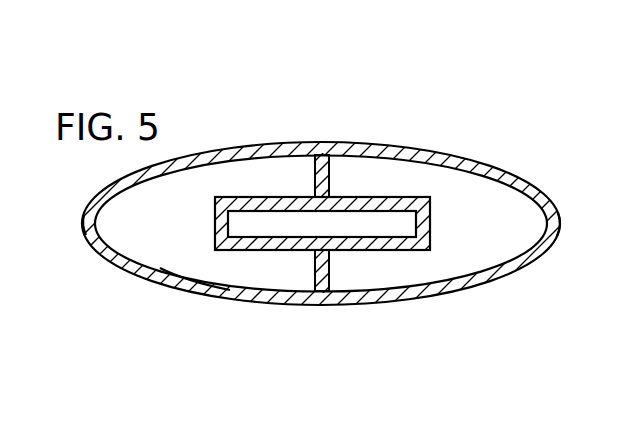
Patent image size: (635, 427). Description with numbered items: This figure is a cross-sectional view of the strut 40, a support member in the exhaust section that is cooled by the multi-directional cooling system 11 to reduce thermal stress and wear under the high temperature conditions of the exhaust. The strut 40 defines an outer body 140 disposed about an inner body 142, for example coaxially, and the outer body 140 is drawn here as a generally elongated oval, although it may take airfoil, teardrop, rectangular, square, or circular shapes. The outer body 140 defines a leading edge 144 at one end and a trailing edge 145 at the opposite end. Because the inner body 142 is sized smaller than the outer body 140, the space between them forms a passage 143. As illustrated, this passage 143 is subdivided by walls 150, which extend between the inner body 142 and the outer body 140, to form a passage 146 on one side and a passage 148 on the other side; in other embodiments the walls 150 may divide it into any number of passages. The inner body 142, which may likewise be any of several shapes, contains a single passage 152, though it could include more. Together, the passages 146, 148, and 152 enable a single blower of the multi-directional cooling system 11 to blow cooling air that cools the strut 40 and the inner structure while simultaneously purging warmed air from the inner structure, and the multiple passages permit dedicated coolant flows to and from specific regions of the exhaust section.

The multi-directional cooling system 11 is at (509, 148).
The strut 40 is at (446, 113).
The outer body 140 is at (290, 140).
The inner body 142 is at (246, 244).
The passage 143 is at (192, 272).
The leading edge 144 is at (89, 228).
The trailing edge 145 is at (557, 231).
The passage 146 is at (171, 237).
The passage 148 is at (513, 237).
The walls 150 is at (345, 152).
The passage 152 is at (391, 228).